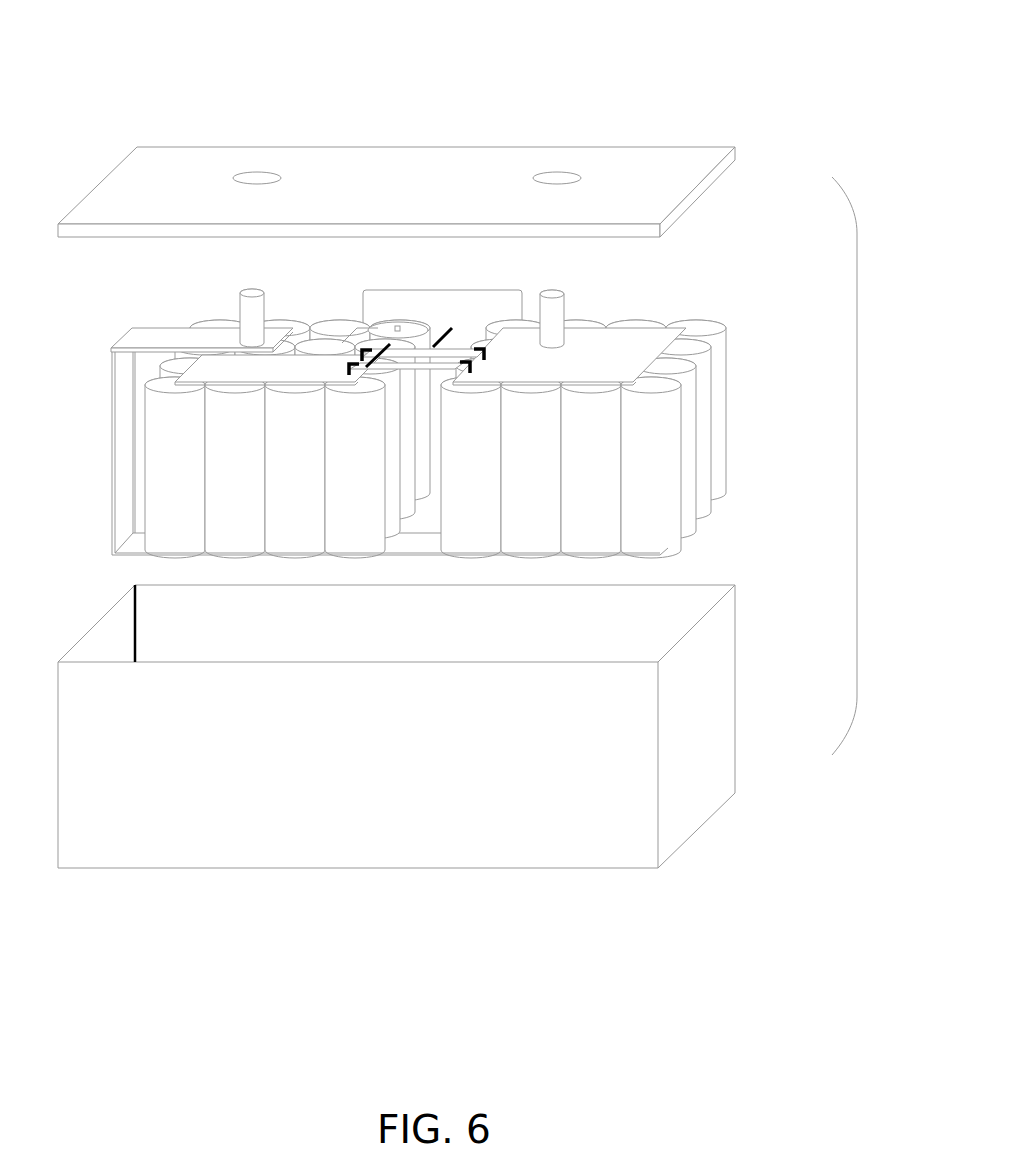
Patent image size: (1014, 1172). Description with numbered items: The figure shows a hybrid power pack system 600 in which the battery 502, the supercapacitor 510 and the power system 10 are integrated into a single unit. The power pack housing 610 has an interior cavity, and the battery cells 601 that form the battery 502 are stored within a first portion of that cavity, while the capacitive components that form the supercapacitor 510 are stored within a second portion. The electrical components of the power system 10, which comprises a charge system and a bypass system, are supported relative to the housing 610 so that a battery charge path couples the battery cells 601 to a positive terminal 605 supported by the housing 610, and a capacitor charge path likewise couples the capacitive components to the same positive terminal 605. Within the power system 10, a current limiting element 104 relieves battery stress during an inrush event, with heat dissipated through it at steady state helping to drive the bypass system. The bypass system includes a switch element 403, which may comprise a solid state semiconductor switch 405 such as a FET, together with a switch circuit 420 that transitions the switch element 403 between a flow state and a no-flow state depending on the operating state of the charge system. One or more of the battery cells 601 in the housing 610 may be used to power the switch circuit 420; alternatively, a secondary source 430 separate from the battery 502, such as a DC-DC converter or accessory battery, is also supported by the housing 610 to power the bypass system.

The power pack system 600 is at (427, 85).
The power system 10 is at (323, 285).
The switch circuit 420 is at (392, 287).
The secondary source 430 is at (380, 320).
The switch element 403 is at (447, 325).
The semiconductor switch 405 is at (462, 348).
The positive terminal 605 is at (565, 308).
The supercapacitor 510 is at (747, 430).
The current limiting element 104 is at (362, 362).
The battery cell 601 is at (157, 410).
The battery 502 is at (163, 483).
The housing 610 is at (875, 466).